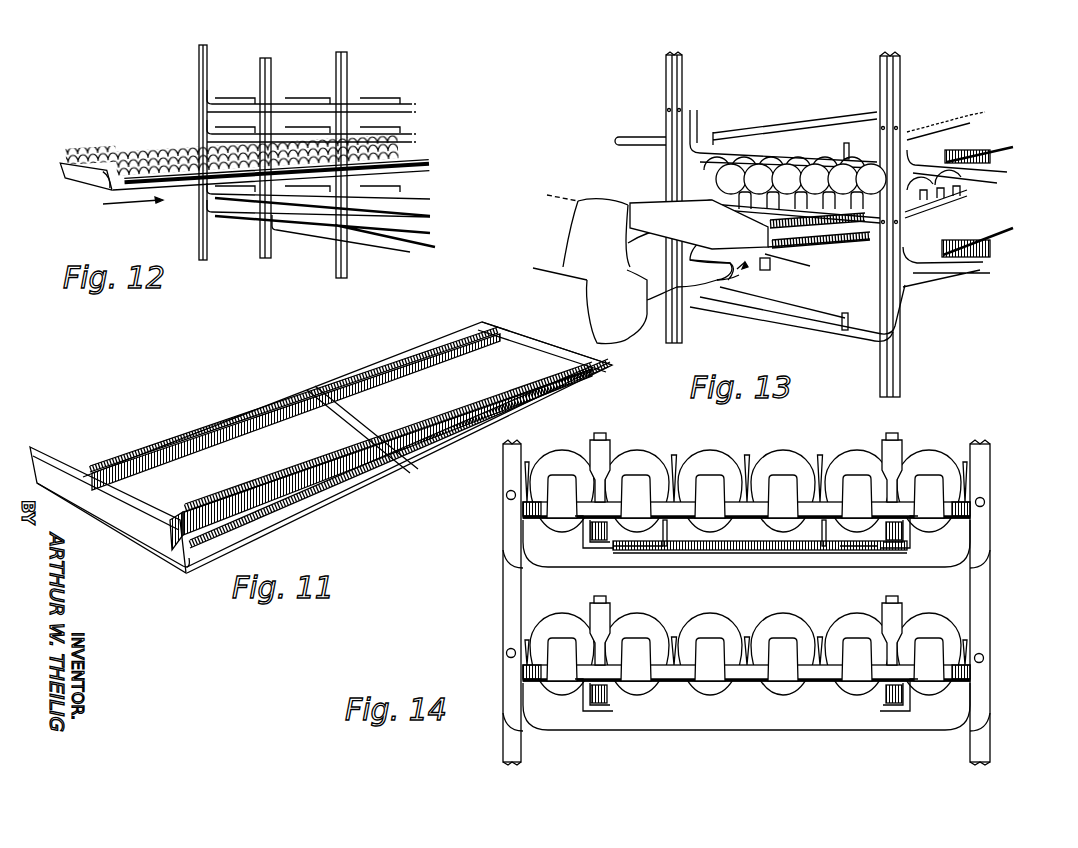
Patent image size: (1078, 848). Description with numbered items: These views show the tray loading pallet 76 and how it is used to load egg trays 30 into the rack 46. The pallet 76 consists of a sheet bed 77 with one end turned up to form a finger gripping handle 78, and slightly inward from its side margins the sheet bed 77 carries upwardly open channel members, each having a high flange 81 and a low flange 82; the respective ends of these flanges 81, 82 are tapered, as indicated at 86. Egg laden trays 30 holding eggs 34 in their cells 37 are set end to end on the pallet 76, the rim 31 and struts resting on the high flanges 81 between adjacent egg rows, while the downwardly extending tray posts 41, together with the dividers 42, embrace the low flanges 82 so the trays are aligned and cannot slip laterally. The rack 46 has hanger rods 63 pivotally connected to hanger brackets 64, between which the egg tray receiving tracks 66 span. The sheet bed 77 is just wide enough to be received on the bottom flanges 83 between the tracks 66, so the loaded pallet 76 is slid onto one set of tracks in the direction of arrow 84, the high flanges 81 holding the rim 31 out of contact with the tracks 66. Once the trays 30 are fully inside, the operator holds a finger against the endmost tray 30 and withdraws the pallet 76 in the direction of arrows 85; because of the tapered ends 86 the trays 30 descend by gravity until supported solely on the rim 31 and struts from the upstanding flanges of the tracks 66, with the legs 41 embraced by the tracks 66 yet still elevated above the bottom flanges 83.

In FIG. 12, the egg tray 30 is at (175, 190).
In FIG. 13, the egg tray 30 is at (820, 232).
In FIG. 14, the egg tray 30 is at (730, 504).
In FIG. 14, the perimetrical rim 31 is at (740, 508).
In FIG. 12, the eggs 34 is at (124, 158).
In FIG. 13, the eggs 34 is at (906, 192).
In FIG. 14, the eggs 34 is at (816, 472).
In FIG. 14, the egg cups 37 is at (640, 482).
In FIG. 14, the tray posts 41 is at (583, 544).
In FIG. 14, the divider post 42 is at (906, 454).
In FIG. 12, the rack 46 is at (366, 96).
In FIG. 13, the rack 46 is at (656, 116).
In FIG. 12, the hanger rods 63 is at (260, 60).
In FIG. 13, the hanger rods 63 is at (681, 54).
In FIG. 14, the hanger rods 63 is at (990, 520).
In FIG. 12, the hanger bracket 64 is at (229, 108).
In FIG. 13, the hanger bracket 64 is at (750, 149).
In FIG. 14, the hanger bracket 64 is at (520, 562).
In FIG. 12, the egg tray receiving tracks 66 is at (296, 102).
In FIG. 13, the egg tray receiving tracks 66 is at (844, 142).
In FIG. 14, the egg tray receiving tracks 66 is at (583, 537).
In FIG. 12, the tray loading pallet 76 is at (94, 198).
In FIG. 13, the tray loading pallet 76 is at (805, 255).
In FIG. 11, the tray loading pallet 76 is at (215, 420).
In FIG. 14, the tray loading pallet 76 is at (792, 554).
In FIG. 11, the sheet bed 77 is at (525, 352).
In FIG. 14, the sheet bed 77 is at (745, 558).
In FIG. 12, the finger gripping handle 78 is at (86, 176).
In FIG. 13, the finger gripping handle 78 is at (640, 214).
In FIG. 11, the finger gripping handle 78 is at (128, 520).
In FIG. 11, the high flange 81 is at (460, 405).
In FIG. 14, the high flange 81 is at (670, 556).
In FIG. 11, the low flange 82 is at (440, 356).
In FIG. 14, the low flange 82 is at (624, 554).
In FIG. 13, the bottom flanges 83 is at (772, 264).
In FIG. 14, the bottom flanges 83 is at (590, 556).
In FIG. 12, the arrow 84 is at (142, 204).
In FIG. 13, the arrows 85 is at (737, 285).
In FIG. 11, the tapered ends 86 is at (467, 331).